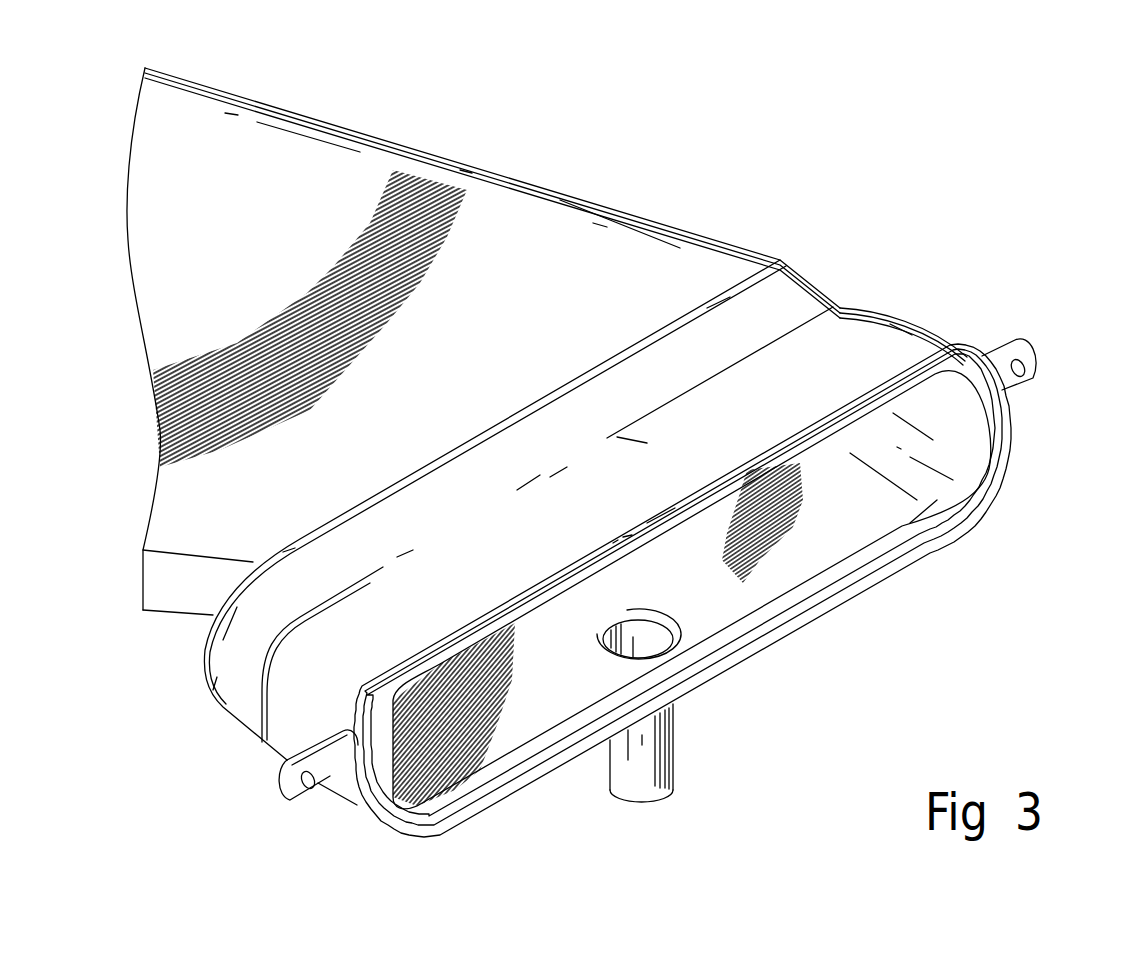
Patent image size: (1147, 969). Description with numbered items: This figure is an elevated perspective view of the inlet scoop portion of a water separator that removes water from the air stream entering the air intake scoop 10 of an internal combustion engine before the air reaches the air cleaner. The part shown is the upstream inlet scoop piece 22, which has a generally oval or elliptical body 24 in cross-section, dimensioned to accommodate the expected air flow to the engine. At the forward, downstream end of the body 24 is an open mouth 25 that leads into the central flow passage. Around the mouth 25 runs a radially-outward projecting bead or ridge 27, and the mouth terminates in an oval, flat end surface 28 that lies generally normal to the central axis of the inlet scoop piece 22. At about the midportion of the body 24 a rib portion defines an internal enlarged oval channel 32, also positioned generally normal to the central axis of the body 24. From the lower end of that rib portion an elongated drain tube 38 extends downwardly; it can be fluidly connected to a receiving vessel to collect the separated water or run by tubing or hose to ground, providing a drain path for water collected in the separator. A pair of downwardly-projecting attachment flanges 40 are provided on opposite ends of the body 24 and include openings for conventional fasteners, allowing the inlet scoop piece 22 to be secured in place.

The air intake scoop 10 is at (641, 137).
The inlet scoop piece 22 is at (925, 323).
The body 24 is at (727, 287).
The open mouth 25 is at (987, 498).
The bead or ridge 27 is at (688, 492).
The flat end surface 28 is at (728, 655).
The internal enlarged channel 32 is at (800, 565).
The drain tube 38 is at (673, 765).
The attachment flanges 40 is at (1030, 350).